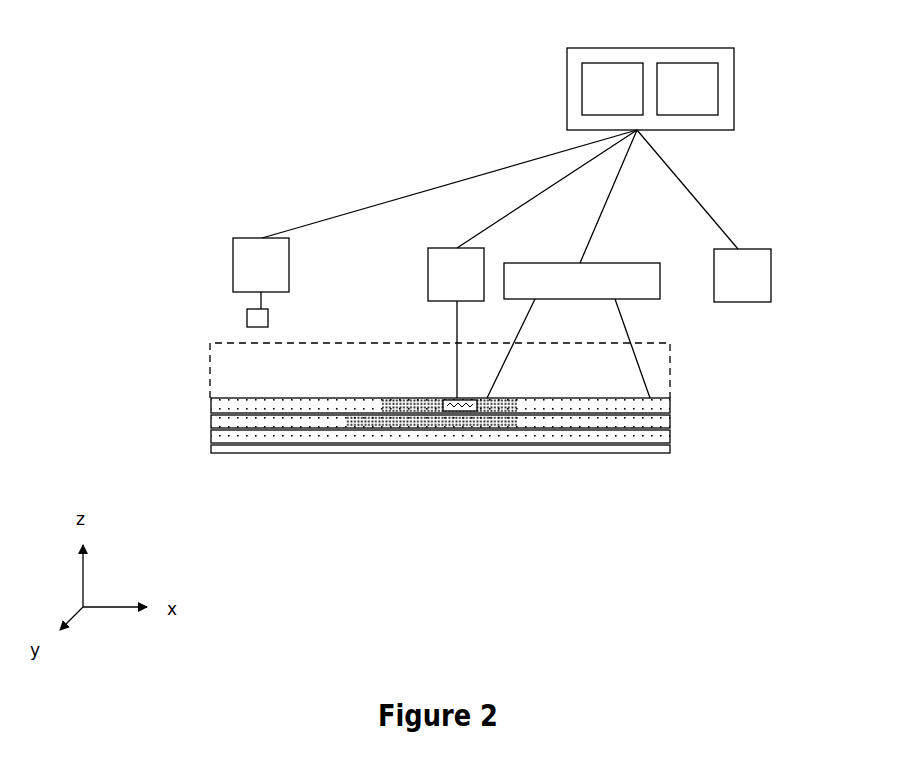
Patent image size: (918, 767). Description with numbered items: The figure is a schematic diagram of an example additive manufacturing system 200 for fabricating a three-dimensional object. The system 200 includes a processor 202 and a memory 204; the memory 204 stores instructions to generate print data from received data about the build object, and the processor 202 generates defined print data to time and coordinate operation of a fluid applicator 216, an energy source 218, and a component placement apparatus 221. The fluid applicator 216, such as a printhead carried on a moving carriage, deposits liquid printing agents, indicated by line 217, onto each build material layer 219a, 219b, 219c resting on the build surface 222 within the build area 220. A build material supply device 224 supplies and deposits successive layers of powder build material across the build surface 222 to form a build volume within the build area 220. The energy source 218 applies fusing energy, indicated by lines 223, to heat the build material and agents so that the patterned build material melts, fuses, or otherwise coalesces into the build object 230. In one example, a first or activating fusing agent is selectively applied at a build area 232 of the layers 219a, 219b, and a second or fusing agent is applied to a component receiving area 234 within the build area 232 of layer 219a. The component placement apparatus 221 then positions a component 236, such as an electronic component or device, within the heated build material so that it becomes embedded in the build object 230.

The additive manufacturing system 200 is at (290, 70).
The processor 202 is at (631, 99).
The memory 204 is at (707, 99).
The fluid applicator 216 is at (428, 277).
The line indicating deposited liquid agents 217 is at (455, 330).
The energy source 218 is at (595, 262).
The build material layer 219a is at (210, 407).
The build material layer 219b is at (210, 418).
The build material layer 219c is at (210, 438).
The build area 220 is at (210, 345).
The component placement apparatus 221 is at (233, 262).
The build surface 222 is at (640, 448).
The lines indicating fusing energy 223 is at (640, 367).
The build material supply device 224 is at (771, 273).
The build object 230 is at (525, 414).
The build area of layers 232 is at (365, 430).
The component receiving area 234 is at (452, 431).
The component 236 is at (247, 315).